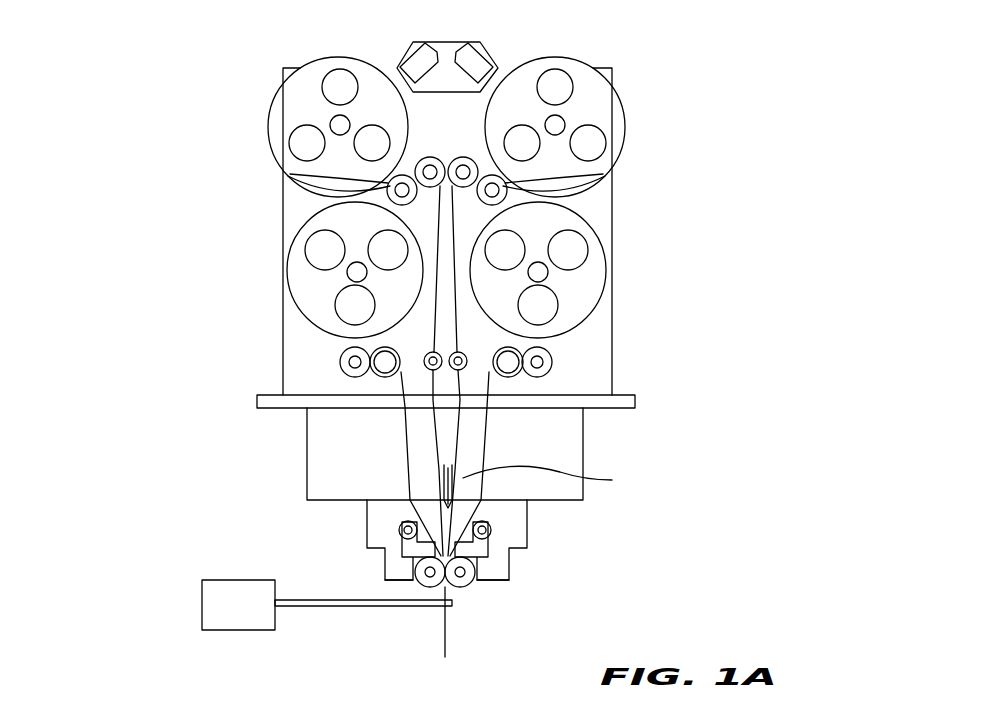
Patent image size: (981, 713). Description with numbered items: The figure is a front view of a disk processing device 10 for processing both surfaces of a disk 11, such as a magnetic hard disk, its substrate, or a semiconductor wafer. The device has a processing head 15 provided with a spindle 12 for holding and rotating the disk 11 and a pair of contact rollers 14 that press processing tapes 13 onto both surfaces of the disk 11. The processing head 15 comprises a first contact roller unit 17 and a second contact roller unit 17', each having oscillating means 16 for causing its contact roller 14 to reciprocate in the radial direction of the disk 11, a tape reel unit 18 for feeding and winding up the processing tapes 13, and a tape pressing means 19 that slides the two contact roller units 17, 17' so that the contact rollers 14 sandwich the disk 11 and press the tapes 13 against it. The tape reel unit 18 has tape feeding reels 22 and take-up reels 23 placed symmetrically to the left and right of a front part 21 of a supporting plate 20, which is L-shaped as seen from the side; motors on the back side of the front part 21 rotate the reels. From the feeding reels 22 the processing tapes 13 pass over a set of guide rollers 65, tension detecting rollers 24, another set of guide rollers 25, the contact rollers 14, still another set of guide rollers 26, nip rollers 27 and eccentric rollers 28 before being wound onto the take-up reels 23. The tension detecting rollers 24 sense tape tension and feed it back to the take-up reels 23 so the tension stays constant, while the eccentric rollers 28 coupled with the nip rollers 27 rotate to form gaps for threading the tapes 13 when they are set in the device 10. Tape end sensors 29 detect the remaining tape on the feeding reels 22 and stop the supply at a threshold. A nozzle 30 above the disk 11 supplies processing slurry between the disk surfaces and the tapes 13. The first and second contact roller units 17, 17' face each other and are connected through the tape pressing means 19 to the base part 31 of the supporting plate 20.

The disk processing device 10 is at (87, 285).
The disk 11 is at (445, 647).
The spindle 12 is at (323, 640).
The processing tapes 13 is at (406, 459).
The contact rollers 14 is at (423, 587).
The processing head 15 is at (140, 183).
The oscillating means 16 is at (352, 522).
The first contact roller unit 17 is at (560, 569).
The second contact roller unit 17' is at (333, 563).
The tape reel unit 18 is at (195, 245).
The tape pressing means 19 is at (297, 453).
The supporting plate 20 is at (653, 257).
The front part 21 is at (612, 306).
The tape feeding reels 22 is at (318, 67).
The take-up reels 23 is at (300, 212).
The tension detecting rollers 24 is at (415, 172).
The guide rollers 25 is at (428, 367).
The guide rollers 26 is at (399, 530).
The nip rollers 27 is at (353, 377).
The eccentric rollers 28 is at (373, 352).
The tape end sensors 29 is at (407, 53).
The nozzle 30 is at (552, 479).
The base part 31 is at (635, 404).
The guide rollers 65 is at (387, 189).